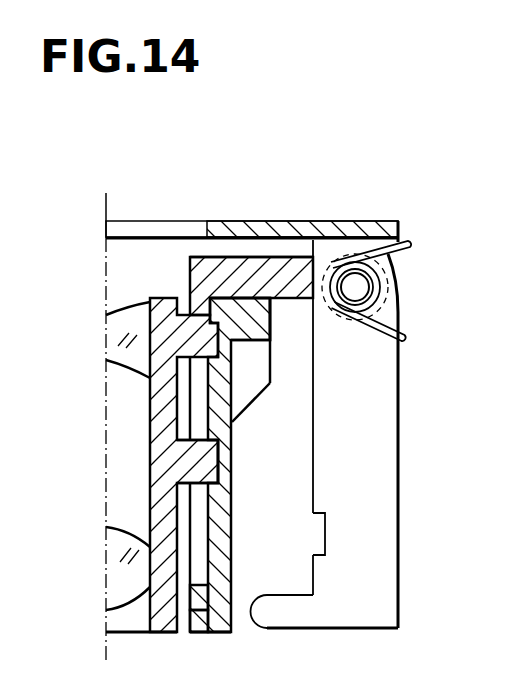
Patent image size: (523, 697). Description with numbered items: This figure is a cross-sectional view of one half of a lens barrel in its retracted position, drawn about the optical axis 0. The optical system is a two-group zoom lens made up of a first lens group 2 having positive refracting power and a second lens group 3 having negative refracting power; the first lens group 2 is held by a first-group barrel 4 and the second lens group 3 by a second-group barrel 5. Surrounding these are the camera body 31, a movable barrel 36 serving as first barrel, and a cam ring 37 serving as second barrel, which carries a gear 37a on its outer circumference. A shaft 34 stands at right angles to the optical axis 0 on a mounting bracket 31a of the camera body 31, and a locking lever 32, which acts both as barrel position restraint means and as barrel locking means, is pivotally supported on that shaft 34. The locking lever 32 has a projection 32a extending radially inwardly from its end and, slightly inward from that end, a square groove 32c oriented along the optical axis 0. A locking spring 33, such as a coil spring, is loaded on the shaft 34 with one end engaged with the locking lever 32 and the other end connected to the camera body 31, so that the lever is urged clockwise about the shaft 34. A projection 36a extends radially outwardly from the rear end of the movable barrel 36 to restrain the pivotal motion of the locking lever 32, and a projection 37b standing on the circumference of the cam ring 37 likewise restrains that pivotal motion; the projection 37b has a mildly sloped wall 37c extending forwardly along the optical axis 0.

The optical axis 0 is at (105, 651).
The first lens group 2 is at (123, 557).
The second lens group 3 is at (112, 338).
The first-group barrel 4 is at (150, 458).
The second-group barrel 5 is at (150, 302).
The camera body 31 is at (222, 226).
The mounting bracket 31a is at (333, 240).
The locking lever 32 is at (383, 610).
The projection 32a is at (278, 610).
The square groove 32c is at (327, 533).
The locking spring 33 is at (383, 320).
The shaft 34 is at (365, 286).
The movable barrel 36 is at (200, 262).
The projection 36a is at (302, 243).
The cam ring 37 is at (210, 612).
The gear 37a is at (248, 308).
The projection 37b is at (257, 362).
The mildly sloped wall 37c is at (262, 398).